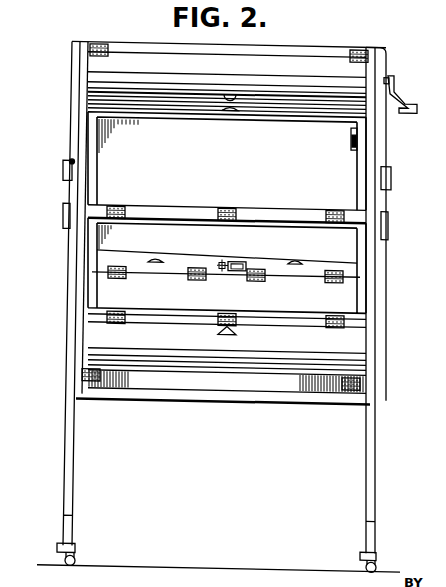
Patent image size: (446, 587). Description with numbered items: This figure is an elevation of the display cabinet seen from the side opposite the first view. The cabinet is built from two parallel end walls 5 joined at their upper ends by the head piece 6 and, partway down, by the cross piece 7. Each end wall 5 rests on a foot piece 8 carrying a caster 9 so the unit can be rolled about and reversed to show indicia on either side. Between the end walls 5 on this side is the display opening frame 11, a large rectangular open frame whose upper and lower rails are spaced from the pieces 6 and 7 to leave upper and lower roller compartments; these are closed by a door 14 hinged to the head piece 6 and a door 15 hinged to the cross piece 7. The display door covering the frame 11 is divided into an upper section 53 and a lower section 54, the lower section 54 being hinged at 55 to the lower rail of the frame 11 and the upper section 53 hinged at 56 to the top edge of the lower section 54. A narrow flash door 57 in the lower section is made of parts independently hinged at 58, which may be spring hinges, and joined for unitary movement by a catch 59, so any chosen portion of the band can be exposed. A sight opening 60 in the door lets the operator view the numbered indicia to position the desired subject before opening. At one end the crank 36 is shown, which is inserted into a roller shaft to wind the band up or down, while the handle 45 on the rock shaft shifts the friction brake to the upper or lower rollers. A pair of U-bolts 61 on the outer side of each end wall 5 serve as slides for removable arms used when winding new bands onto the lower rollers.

The end wall 5 is at (72, 257).
The head piece 6 is at (342, 41).
The cross piece 7 is at (318, 398).
The foot piece 8 is at (72, 545).
The caster 9 is at (78, 552).
The display opening frame 11 is at (74, 283).
The door 14 is at (92, 63).
The door 15 is at (90, 341).
The crank 36 is at (405, 94).
The handle 45 is at (63, 217).
The upper door section 53 is at (227, 161).
The lower door section 54 is at (227, 266).
The hinge 55 is at (107, 318).
The hinge 56 is at (229, 203).
The flash door 57 is at (177, 262).
The hinge 58 is at (198, 276).
The catch 59 is at (233, 258).
The sight opening 60 is at (358, 140).
The U-bolt 61 is at (62, 166).